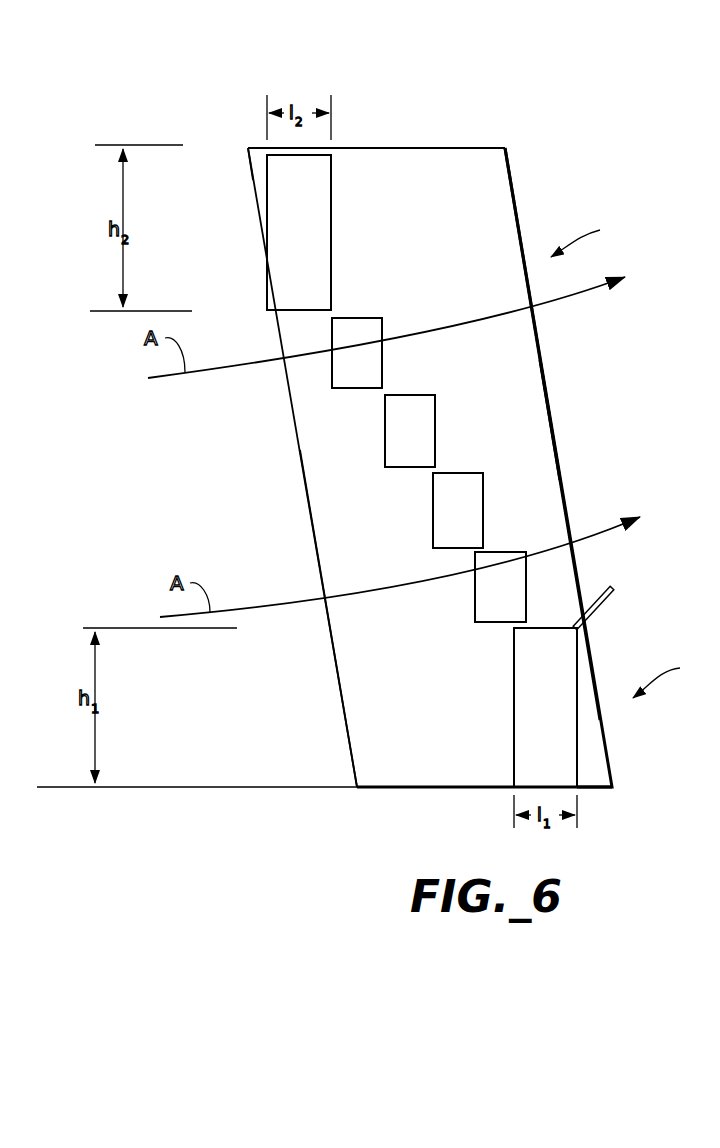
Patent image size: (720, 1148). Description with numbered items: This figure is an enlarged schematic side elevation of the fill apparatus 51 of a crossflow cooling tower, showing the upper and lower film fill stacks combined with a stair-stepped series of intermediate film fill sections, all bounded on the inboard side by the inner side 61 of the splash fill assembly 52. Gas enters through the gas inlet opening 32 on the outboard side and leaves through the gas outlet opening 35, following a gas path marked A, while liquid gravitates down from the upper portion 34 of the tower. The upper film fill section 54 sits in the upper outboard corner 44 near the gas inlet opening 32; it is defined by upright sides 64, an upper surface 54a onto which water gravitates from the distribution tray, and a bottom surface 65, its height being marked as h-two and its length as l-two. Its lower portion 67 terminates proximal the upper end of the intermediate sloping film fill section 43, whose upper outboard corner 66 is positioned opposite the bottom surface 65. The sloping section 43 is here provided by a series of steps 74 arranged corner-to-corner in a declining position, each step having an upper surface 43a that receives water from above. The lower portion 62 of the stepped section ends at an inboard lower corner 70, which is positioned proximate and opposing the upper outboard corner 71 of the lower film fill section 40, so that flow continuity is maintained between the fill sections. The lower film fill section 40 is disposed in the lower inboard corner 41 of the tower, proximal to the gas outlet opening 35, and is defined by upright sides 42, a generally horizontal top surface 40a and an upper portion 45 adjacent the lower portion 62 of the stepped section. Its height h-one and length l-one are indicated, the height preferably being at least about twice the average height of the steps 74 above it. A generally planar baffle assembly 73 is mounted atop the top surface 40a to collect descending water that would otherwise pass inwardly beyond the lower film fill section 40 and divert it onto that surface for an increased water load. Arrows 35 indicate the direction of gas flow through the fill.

The gas inlet opening 32 is at (311, 684).
The upper portion 34 is at (462, 162).
The gas outlet opening 35 is at (631, 457).
The lower film fill section 40 is at (507, 767).
The top surface 40a is at (558, 628).
The lower inboard corner 41 is at (590, 781).
The upright sides 42 is at (513, 745).
The sloping film fill section 43 is at (366, 422).
The upper surface 43a is at (362, 317).
The upper outboard corner 44 is at (250, 148).
The upper portion 45 is at (563, 660).
The fill apparatus 51 is at (515, 186).
The splash fill assembly 52 is at (484, 264).
The upper film fill section 54 is at (336, 213).
The upper surface 54a is at (293, 152).
The inner side 61 is at (530, 402).
The lower portion 62 is at (475, 560).
The upright sides 64 is at (265, 182).
The bottom surface 65 is at (275, 312).
The upper outboard corner 66 is at (330, 327).
The lower portion 67 is at (310, 287).
The inboard lower corner 70 is at (530, 622).
The upper outboard corner 71 is at (514, 628).
The baffle assembly 73 is at (600, 605).
The steps 74 is at (433, 490).